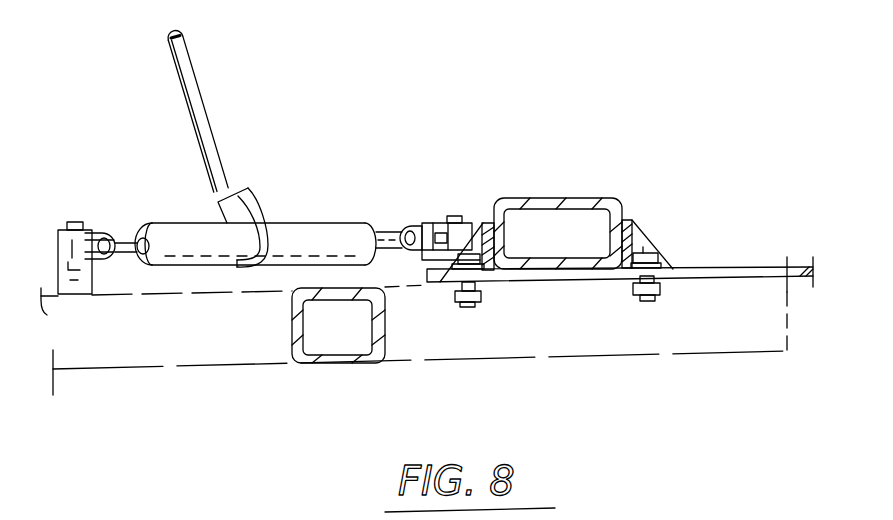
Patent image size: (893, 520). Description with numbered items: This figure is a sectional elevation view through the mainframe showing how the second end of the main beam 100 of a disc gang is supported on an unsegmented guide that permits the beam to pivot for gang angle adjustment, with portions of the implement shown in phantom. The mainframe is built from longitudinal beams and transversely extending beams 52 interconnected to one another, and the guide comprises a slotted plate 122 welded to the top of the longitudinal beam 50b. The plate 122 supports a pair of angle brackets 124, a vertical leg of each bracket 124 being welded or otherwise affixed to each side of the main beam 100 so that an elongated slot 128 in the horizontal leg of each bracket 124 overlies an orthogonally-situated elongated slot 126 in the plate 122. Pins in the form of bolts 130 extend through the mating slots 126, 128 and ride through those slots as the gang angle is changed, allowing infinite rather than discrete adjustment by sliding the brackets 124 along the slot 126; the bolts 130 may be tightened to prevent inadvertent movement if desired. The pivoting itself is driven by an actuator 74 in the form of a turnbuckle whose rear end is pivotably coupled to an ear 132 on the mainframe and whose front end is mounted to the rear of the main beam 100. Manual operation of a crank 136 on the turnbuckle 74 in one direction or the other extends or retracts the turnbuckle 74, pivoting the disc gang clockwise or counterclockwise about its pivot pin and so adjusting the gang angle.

The crank 136 is at (192, 68).
The actuator 74 is at (300, 224).
The ear 132 is at (90, 243).
The angle bracket 124 is at (483, 226).
The main beam 100 is at (567, 198).
The bolt 130 is at (450, 257).
The slot 126 is at (746, 270).
The slotted plate 122 is at (806, 262).
The elongated slot 128 is at (440, 282).
The transversely extending beam 52 is at (333, 364).
The longitudinal beam 50b is at (631, 381).